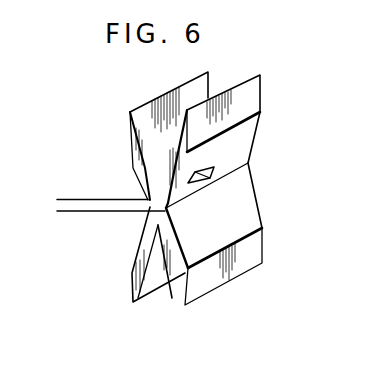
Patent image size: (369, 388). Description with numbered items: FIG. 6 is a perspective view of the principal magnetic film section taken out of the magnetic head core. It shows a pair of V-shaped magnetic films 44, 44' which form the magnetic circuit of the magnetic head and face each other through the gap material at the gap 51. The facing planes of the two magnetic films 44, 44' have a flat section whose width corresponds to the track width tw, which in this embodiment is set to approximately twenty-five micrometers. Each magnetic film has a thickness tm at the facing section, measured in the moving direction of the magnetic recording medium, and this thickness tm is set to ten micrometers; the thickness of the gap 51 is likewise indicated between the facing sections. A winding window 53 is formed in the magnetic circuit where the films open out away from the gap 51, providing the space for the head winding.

The magnetic film 44 is at (214, 140).
The magnetic film 44' is at (197, 239).
The winding window 53 is at (214, 167).
The gap 51 is at (156, 211).
The thickness of the magnetic film tm is at (90, 211).
The track width tw is at (147, 205).